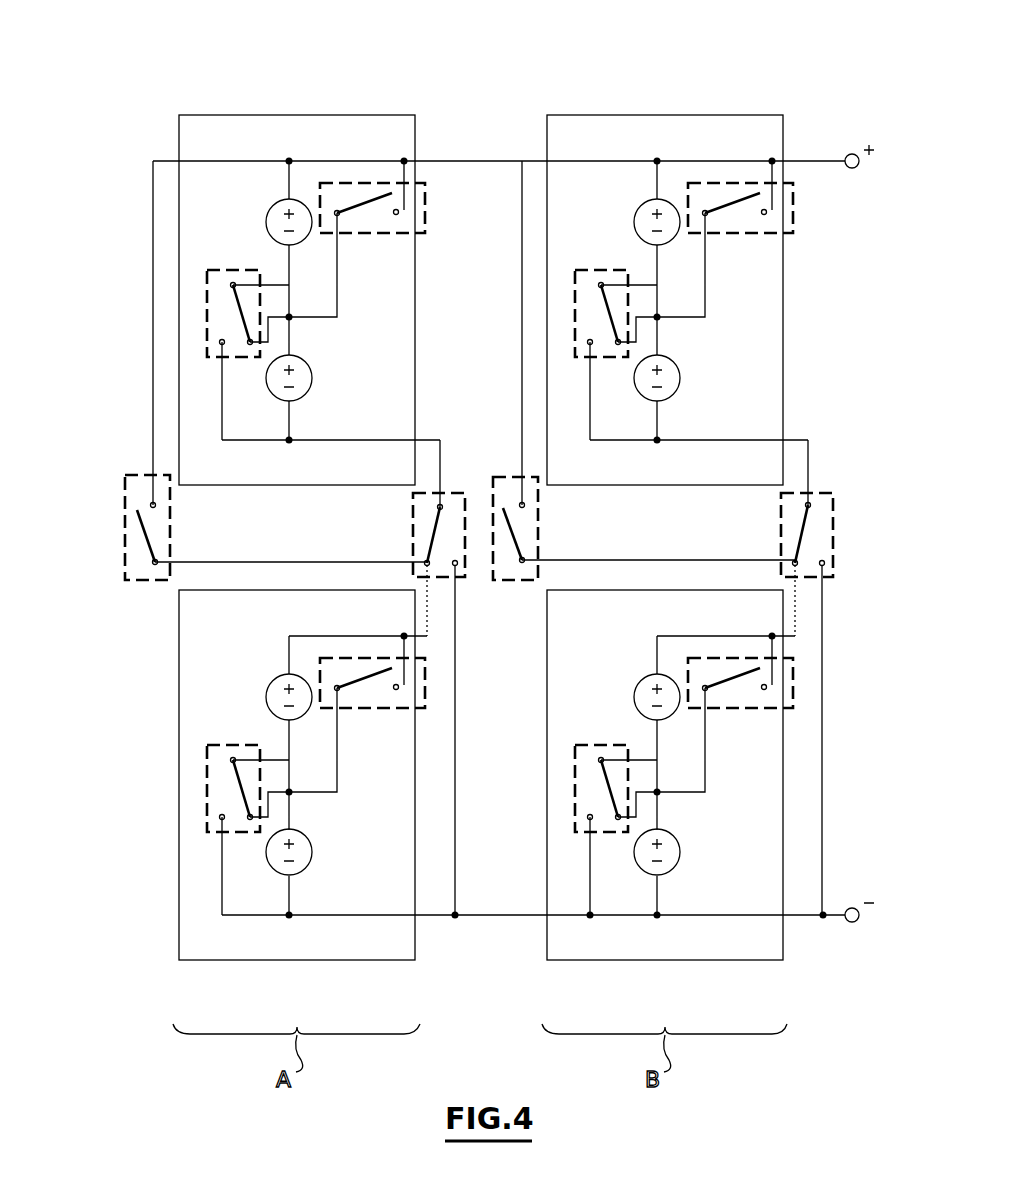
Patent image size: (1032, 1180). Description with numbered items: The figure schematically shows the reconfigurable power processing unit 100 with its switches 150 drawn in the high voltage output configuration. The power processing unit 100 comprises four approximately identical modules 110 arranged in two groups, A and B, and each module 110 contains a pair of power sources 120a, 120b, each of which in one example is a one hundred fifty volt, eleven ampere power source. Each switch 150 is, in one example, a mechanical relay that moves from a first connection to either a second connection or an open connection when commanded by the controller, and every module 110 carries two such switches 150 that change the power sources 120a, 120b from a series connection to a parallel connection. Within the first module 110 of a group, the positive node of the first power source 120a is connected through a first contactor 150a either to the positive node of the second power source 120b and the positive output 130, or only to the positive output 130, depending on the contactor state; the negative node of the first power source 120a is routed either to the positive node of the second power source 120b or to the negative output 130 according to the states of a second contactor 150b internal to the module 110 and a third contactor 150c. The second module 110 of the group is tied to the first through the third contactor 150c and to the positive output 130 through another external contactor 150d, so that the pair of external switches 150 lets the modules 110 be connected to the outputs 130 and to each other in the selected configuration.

The power processing unit 100 is at (118, 128).
The module 110 is at (658, 996).
The first power source 120a is at (268, 207).
The second power source 120b is at (312, 368).
The output 130 is at (851, 153).
The switch 150 is at (607, 745).
The first contactor 150a is at (398, 742).
The second contactor 150b is at (249, 270).
The third contactor 150c is at (448, 493).
The contactor 150d is at (133, 475).